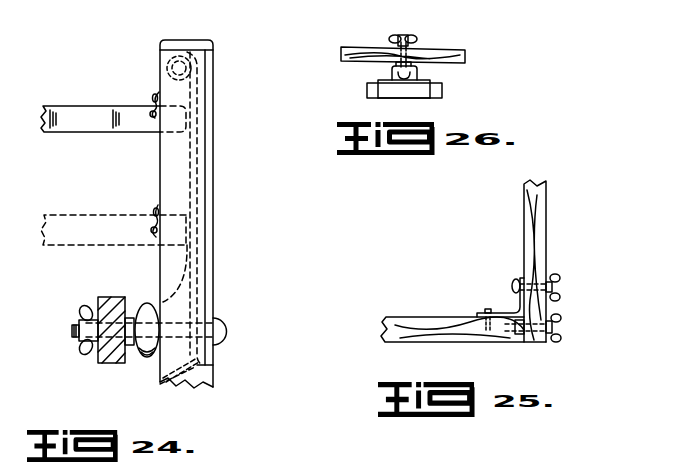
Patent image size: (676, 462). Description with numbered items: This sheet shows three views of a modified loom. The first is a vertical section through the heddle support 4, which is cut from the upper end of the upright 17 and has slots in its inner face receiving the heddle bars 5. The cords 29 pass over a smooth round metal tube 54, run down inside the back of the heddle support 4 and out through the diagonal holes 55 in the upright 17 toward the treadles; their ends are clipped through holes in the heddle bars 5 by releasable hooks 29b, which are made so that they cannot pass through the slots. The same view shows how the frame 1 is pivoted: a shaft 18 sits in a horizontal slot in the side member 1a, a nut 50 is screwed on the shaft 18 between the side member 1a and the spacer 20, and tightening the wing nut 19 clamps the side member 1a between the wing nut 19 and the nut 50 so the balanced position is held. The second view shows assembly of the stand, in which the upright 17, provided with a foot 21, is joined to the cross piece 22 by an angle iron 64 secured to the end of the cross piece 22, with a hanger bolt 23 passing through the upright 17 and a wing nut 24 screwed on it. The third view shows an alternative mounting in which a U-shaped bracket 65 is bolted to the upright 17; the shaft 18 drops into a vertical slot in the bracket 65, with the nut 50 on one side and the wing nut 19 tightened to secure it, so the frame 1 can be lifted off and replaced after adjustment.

In FIG. 26, the frame 1 is at (453, 49).
In FIG. 24, the side member 1a is at (110, 297).
In FIG. 26, the heddle support 4 is at (416, 96).
In FIG. 24, the heddle bar 5 is at (73, 113).
In FIG. 25, the upright 17 is at (547, 220).
In FIG. 24, the shaft 18 is at (73, 331).
In FIG. 26, the shaft 18 is at (403, 36).
In FIG. 24, the wing nut 19 is at (88, 310).
In FIG. 26, the wing nut 19 is at (410, 38).
In FIG. 24, the spacer 20 is at (147, 304).
In FIG. 26, the foot 21 is at (443, 90).
In FIG. 25, the cross piece 22 is at (437, 325).
In FIG. 25, the hanger bolt 23 is at (557, 331).
In FIG. 25, the wing nut 24 is at (551, 323).
In FIG. 24, the cord 29 is at (198, 104).
In FIG. 24, the releasable hook 29b is at (157, 212).
In FIG. 24, the nut 50 is at (131, 362).
In FIG. 26, the nut 50 is at (396, 65).
In FIG. 24, the tube 54 is at (166, 62).
In FIG. 24, the diagonal hole 55 is at (194, 368).
In FIG. 25, the angle iron 64 is at (497, 312).
In FIG. 26, the bracket 65 is at (418, 72).